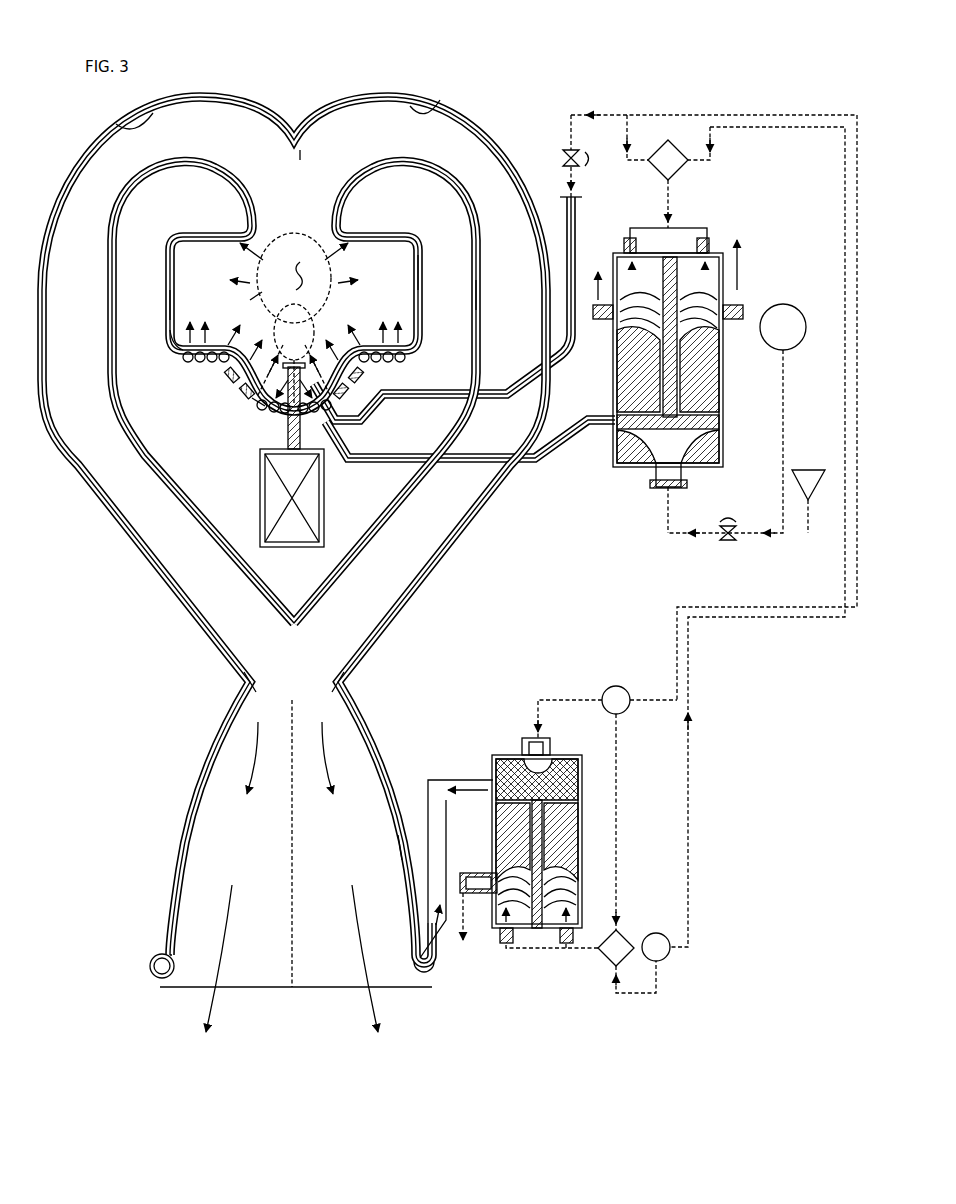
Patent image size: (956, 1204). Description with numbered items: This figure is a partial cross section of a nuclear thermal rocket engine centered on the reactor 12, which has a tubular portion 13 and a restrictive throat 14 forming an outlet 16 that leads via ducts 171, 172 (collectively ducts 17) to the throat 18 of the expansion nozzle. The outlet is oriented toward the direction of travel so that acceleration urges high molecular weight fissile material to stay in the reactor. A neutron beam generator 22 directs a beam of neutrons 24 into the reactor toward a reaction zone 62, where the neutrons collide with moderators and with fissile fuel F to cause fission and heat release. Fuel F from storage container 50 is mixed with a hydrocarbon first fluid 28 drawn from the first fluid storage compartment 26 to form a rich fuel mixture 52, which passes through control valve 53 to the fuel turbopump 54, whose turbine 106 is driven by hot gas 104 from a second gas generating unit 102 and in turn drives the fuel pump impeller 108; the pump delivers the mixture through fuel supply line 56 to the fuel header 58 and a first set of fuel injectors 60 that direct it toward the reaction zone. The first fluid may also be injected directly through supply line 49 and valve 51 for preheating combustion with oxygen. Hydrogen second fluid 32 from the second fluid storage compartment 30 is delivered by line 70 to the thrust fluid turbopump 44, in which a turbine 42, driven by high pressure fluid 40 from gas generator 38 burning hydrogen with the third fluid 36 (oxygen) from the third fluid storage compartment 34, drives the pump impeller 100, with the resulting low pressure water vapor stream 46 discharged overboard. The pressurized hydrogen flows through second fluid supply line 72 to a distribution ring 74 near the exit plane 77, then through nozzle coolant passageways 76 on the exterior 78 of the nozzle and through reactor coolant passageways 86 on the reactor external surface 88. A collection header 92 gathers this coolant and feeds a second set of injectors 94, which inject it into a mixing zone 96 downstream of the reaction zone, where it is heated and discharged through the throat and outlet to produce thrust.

The reactor 12 is at (418, 268).
The tubular portion 13 is at (430, 296).
The throat 14 is at (332, 213).
The outlet 16 is at (336, 194).
The ducts 17 is at (294, 532).
The duct 171 is at (112, 120).
The duct 172 is at (445, 106).
The throat of expansion nozzle 18 is at (318, 690).
The neutron beam generator 22 is at (260, 470).
The beam of neutrons 24 is at (294, 278).
The first fluid storage compartment 26 is at (800, 310).
The first fluid 28 is at (800, 343).
The second fluid storage compartment 30 is at (626, 712).
The second fluid 32 is at (606, 710).
The third fluid storage compartment 34 is at (668, 958).
The third fluid 36 is at (664, 935).
The gas generator 38 is at (628, 935).
The high pressure fluid 40 is at (583, 948).
The turbine 42 is at (575, 872).
The thrust fluid turbopump 44 is at (539, 840).
The low pressure water vapor stream 46 is at (600, 300).
The supply line 49 is at (692, 115).
The storage container 50 is at (805, 470).
The valve 51 is at (585, 158).
The rich fuel mixture 52 is at (740, 540).
The control valve 53 is at (725, 525).
The fuel turbopump 54 is at (674, 365).
The fuel supply line 56 is at (560, 455).
The fuel header 58 is at (260, 413).
The first set of fuel injectors 60 is at (288, 430).
The reaction zone 62 is at (276, 326).
The line 70 is at (580, 700).
The second fluid supply line 72 is at (430, 781).
The distribution ring 74 is at (432, 988).
The nozzle coolant passageways 76 is at (360, 735).
The exit plane 77 is at (388, 990).
The exterior of expansion nozzle 78 is at (188, 886).
The reactor coolant passageways 86 is at (165, 305).
The reactor external surface 88 is at (172, 335).
The collection header 92 is at (252, 405).
The second set of injectors 94 is at (185, 358).
The mixing zone 96 is at (258, 290).
The pump impeller 100 is at (578, 762).
The second gas generating unit 102 is at (684, 176).
The hot gas 104 is at (672, 205).
The turbine 106 is at (705, 325).
The fuel pump impeller 108 is at (655, 462).